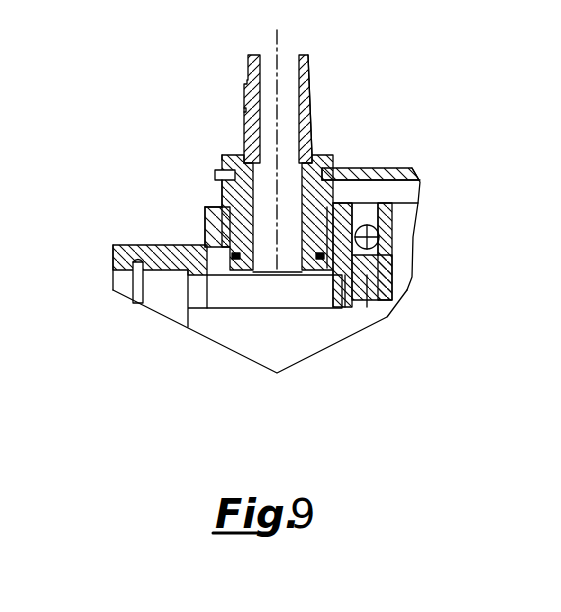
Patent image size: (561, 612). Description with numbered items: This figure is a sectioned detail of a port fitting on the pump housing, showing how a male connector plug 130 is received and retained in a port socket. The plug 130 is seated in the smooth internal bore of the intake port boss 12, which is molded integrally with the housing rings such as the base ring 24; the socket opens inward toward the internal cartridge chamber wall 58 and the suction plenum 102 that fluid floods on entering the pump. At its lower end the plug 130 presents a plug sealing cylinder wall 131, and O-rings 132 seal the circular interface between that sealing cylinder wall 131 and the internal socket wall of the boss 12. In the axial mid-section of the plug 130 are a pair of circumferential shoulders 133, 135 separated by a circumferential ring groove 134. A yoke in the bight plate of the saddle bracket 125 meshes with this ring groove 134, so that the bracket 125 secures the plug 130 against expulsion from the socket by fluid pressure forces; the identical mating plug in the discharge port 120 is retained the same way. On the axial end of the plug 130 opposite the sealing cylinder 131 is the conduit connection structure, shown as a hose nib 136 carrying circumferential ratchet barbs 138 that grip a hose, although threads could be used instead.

The hose nib 136 is at (248, 66).
The circumferential ratchet barbs 138 is at (328, 98).
The male connector plug 130 is at (318, 156).
The saddle bracket 125 is at (398, 158).
The plug sealing cylinder wall 131 is at (237, 254).
The discharge port 120 is at (410, 257).
The circumferential shoulder 135 is at (218, 158).
The circumferential ring groove 134 is at (215, 174).
The circumferential shoulder 133 is at (222, 193).
The intake port boss 12 is at (208, 213).
The base ring 24 is at (140, 252).
The O-rings 132 is at (236, 258).
The suction plenum 102 is at (322, 305).
The internal cartridge chamber wall 58 is at (287, 352).